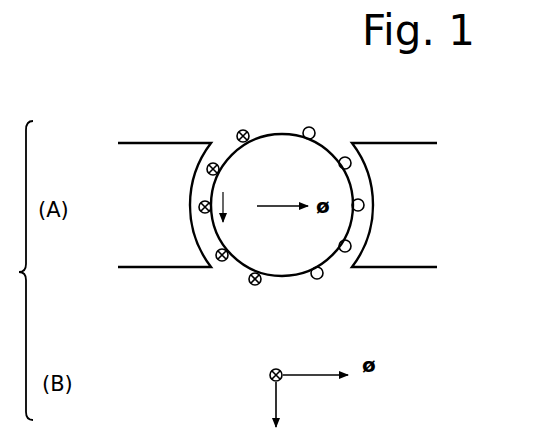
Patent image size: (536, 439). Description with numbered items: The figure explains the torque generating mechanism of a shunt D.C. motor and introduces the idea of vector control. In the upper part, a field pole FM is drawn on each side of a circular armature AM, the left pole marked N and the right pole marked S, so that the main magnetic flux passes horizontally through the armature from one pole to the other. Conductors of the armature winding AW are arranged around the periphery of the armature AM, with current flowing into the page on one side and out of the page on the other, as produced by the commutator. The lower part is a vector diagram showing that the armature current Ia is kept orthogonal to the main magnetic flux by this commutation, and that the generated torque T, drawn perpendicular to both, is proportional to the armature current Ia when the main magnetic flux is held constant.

The field pole FM is at (165, 158).
The armature AM is at (281, 144).
The armature winding AW is at (244, 131).
The north pole N is at (166, 208).
The south pole S is at (392, 205).
The armature current Ia is at (279, 369).
The generated torque T is at (289, 406).